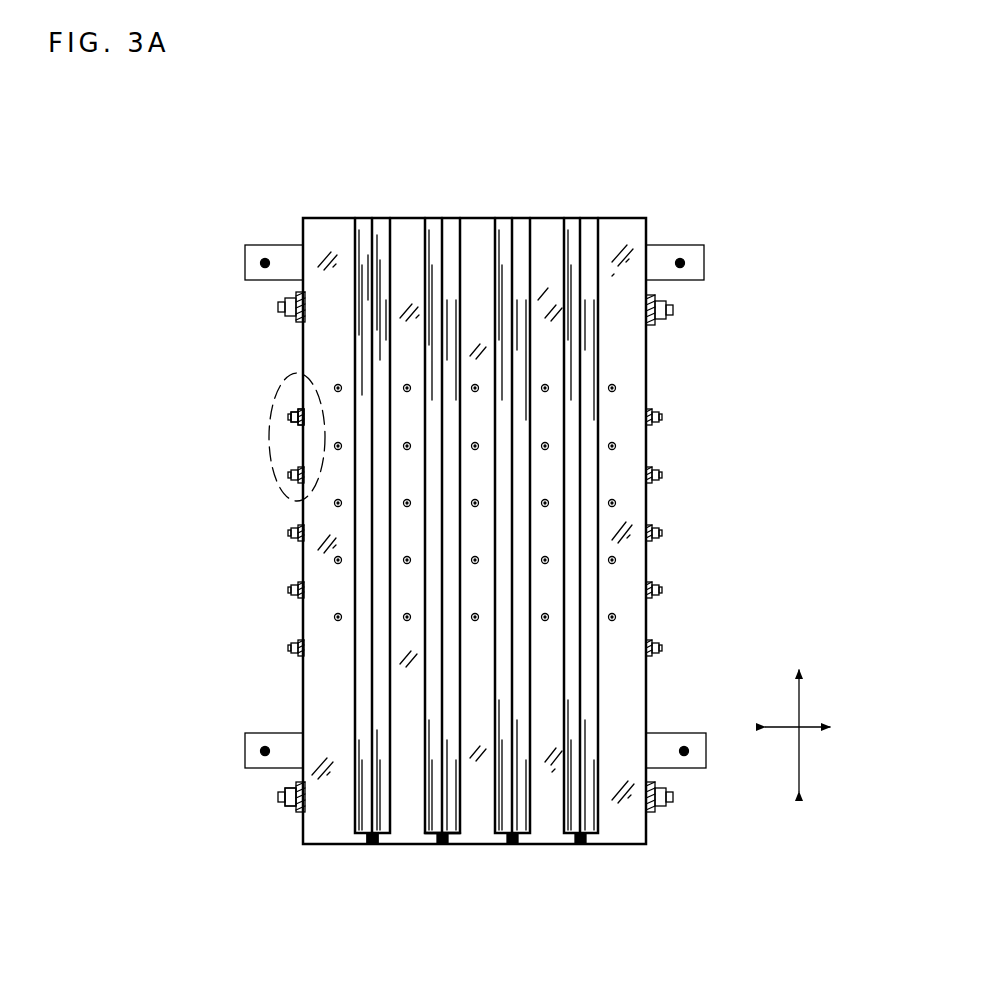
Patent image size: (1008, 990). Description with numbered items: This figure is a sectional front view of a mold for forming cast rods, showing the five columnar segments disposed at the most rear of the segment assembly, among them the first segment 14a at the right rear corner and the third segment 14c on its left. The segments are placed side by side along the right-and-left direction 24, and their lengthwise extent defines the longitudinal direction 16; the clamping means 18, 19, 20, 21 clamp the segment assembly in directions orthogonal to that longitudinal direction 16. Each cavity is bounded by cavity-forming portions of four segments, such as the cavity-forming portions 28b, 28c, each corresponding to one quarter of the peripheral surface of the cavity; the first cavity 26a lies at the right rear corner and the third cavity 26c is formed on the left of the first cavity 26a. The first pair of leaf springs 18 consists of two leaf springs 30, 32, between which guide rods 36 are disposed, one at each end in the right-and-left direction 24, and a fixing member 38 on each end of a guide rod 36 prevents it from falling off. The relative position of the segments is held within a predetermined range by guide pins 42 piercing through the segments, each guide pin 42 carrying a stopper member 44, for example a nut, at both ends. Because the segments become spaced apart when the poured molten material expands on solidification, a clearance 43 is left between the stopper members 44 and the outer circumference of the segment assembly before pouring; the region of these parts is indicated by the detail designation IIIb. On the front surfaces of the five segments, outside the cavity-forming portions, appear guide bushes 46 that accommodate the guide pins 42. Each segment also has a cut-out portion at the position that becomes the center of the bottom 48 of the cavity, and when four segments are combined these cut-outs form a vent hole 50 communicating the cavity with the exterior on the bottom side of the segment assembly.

The first segment 14a is at (620, 218).
The third segment 14c is at (545, 218).
The longitudinal direction 16 is at (800, 703).
The right-and-left direction 24 is at (800, 736).
The first cavity 26a is at (585, 228).
The third cavity 26c is at (500, 228).
The cavity-forming portion 28b is at (360, 222).
The cavity-forming portion 28c is at (380, 230).
The leaf spring 30 is at (297, 322).
The leaf spring 32 is at (479, 537).
The first pair of leaf springs 18 is at (275, 244).
The clamping means 19 is at (272, 733).
The clamping means 20 is at (655, 325).
The clamping means 21 is at (655, 815).
The guide rod 36 is at (262, 263).
The fixing member 38 is at (290, 808).
The guide pin 42 is at (290, 416).
The clearance 43 is at (298, 402).
The stopper member 44 is at (298, 427).
The guide bush 46 is at (334, 616).
The bottom of the cavity 48 is at (447, 830).
The vent hole 50 is at (374, 845).
The detail section IIIb is at (268, 502).